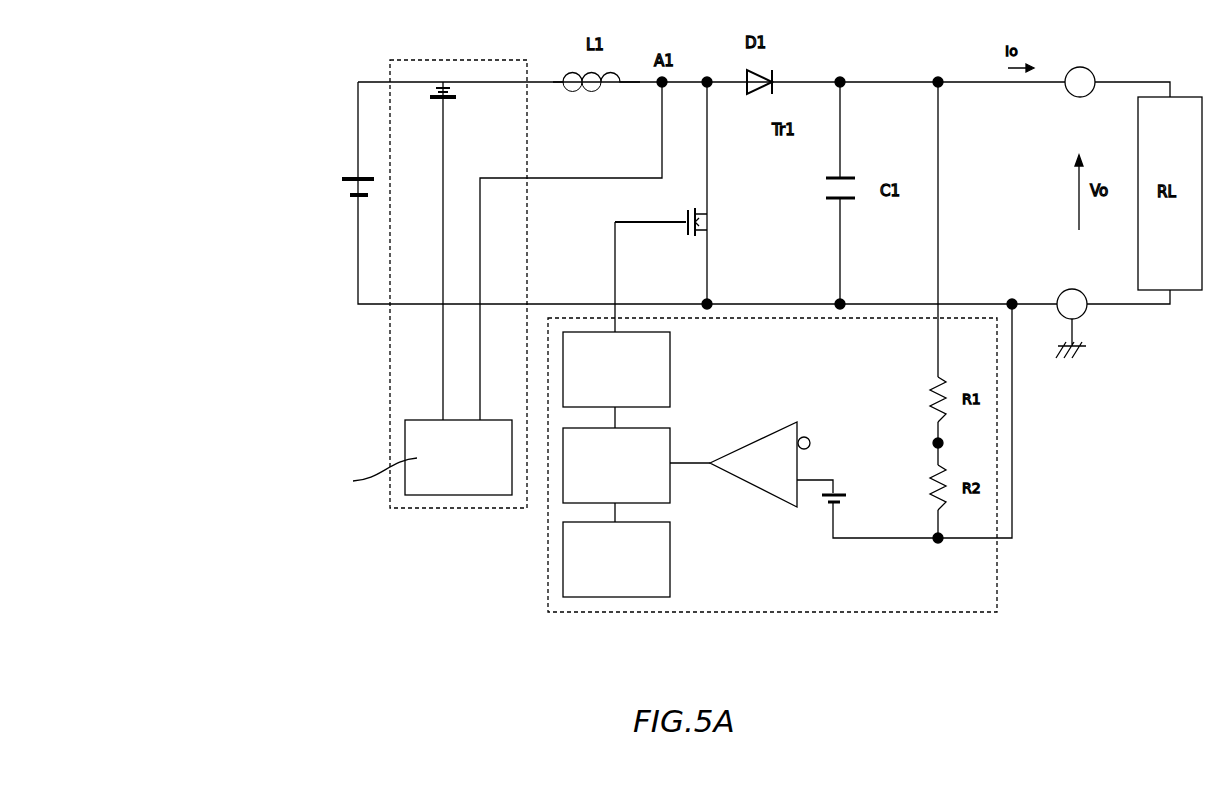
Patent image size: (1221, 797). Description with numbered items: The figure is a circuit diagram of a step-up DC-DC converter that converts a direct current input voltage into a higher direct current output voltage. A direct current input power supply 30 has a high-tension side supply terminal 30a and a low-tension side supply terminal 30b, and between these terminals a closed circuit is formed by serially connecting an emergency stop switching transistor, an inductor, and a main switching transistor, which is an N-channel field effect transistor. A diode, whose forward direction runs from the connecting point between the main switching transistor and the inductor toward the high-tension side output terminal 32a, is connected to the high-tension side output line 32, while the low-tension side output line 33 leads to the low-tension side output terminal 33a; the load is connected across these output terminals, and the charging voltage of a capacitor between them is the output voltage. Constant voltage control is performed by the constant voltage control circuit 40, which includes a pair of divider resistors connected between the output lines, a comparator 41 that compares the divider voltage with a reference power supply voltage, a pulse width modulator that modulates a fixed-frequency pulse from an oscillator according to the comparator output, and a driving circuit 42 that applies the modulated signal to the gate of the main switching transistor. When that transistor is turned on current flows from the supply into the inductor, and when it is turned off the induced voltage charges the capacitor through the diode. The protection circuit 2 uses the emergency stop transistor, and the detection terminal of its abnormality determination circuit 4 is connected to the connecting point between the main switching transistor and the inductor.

The protection circuit 2 is at (490, 56).
The abnormality determination circuit 4 is at (453, 497).
The direct current input power supply 30 is at (281, 184).
The high-tension side supply terminal 30a is at (342, 179).
The low-tension side supply terminal 30b is at (350, 195).
The high-tension side output line 32 is at (975, 81).
The high-tension side output terminal 32a is at (1078, 67).
The low-tension side output line 33 is at (1045, 302).
The low-tension side output terminal 33a is at (1091, 326).
The constant voltage control circuit 40 is at (802, 467).
The comparator 41 is at (766, 403).
The driving circuit 42 is at (672, 383).